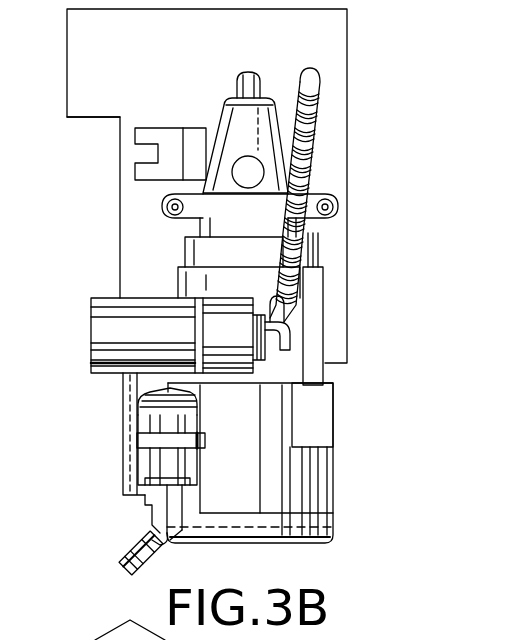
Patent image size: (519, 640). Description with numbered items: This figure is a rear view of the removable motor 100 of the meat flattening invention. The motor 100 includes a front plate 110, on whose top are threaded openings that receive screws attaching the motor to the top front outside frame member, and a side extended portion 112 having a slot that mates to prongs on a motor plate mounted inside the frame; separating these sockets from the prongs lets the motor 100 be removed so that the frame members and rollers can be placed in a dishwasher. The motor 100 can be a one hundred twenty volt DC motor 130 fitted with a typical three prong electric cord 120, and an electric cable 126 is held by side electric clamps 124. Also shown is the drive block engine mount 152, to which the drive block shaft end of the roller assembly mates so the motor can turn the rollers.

The removable motor 100 is at (65, 236).
The front plate 110 is at (197, 52).
The side extended portion 112 is at (95, 106).
The drive block engine mount 152 is at (148, 135).
The electric cable 126 is at (311, 166).
The side electric clamps 124 is at (277, 335).
The 120 Volt DC motor 130 is at (253, 484).
The three prong electric cord 120 is at (138, 549).